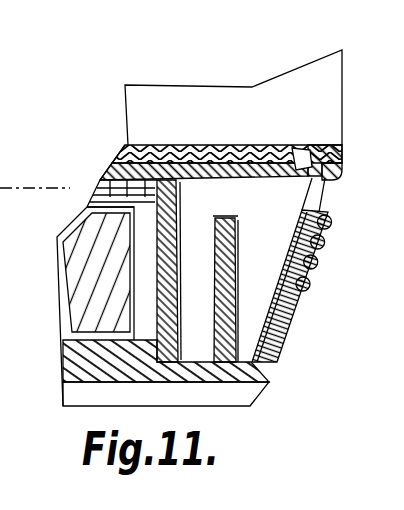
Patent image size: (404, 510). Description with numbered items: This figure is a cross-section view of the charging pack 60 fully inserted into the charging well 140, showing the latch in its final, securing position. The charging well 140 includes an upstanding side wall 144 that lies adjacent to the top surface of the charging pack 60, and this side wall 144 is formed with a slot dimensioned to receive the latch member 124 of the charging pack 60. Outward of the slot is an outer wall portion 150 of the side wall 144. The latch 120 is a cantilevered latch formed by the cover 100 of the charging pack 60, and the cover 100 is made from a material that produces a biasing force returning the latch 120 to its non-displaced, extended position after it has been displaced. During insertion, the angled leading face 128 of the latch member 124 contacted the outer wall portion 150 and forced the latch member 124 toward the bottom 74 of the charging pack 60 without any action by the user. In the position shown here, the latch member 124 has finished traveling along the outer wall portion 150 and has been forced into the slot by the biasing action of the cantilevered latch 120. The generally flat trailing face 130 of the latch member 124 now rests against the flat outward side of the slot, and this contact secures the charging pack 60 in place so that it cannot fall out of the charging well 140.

The charging pack 60 is at (272, 372).
The bottom of the charging pack 74 is at (88, 383).
The cover 100 is at (116, 163).
The latch 120 is at (337, 232).
The latch member 124 is at (299, 166).
The leading face 128 is at (290, 150).
The trailing face 130 is at (294, 146).
The charging well 140 is at (232, 385).
The side wall 144 is at (183, 145).
The outer wall portion 150 is at (337, 164).